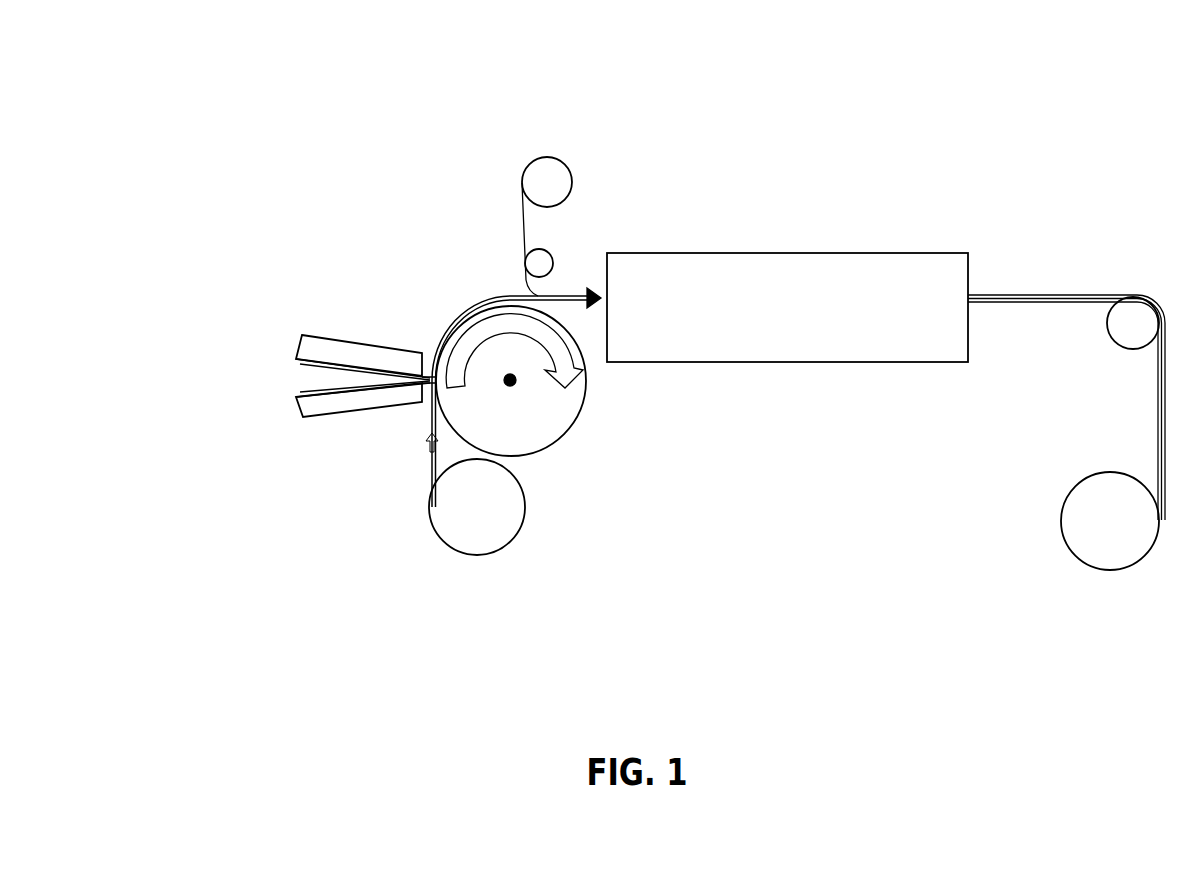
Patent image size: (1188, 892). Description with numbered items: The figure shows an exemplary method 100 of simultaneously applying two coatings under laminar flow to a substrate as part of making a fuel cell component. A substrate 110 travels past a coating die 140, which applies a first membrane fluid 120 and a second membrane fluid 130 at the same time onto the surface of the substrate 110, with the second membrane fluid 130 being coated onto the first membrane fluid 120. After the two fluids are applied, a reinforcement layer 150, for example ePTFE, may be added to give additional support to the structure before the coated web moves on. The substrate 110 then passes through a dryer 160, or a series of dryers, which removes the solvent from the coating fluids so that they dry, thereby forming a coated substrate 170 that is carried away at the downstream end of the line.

The method 100 is at (1038, 192).
The substrate 110 is at (432, 463).
The first membrane fluid 120 is at (333, 393).
The second membrane fluid 130 is at (310, 357).
The coating die 140 is at (355, 323).
The reinforcement layer 150 is at (522, 213).
The dryer 160 is at (787, 307).
The coated substrate 170 is at (1158, 423).